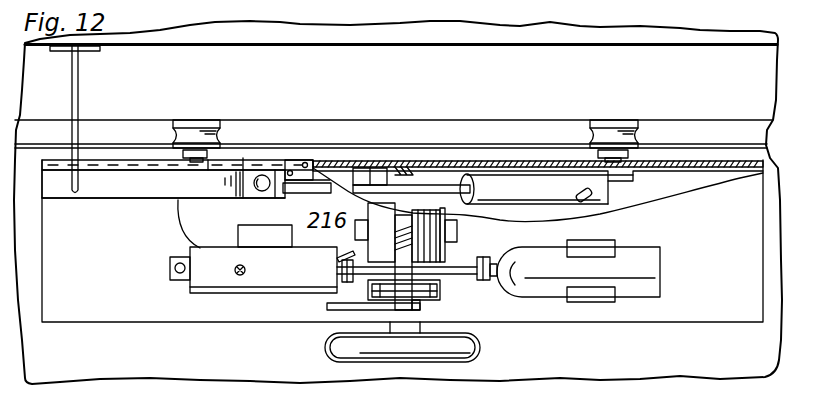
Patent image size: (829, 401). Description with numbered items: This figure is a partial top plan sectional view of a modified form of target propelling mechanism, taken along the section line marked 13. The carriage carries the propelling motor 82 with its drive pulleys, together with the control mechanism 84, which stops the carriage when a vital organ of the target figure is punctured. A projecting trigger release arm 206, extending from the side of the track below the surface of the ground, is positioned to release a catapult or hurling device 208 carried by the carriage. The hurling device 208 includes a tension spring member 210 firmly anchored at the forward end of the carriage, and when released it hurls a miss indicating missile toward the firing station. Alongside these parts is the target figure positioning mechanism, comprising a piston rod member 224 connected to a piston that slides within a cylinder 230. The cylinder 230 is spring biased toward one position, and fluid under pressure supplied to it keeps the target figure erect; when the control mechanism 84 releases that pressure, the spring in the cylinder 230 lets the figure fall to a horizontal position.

The section line 13- 13 is at (84, 211).
The propelling motor 82 is at (433, 257).
The control mechanism 84 is at (270, 297).
The trigger release arm 206 is at (80, 108).
The hurling device 208 is at (120, 199).
The tension spring member 210 is at (152, 188).
The piston rod member 224 is at (387, 182).
The cylinder 230 is at (512, 187).